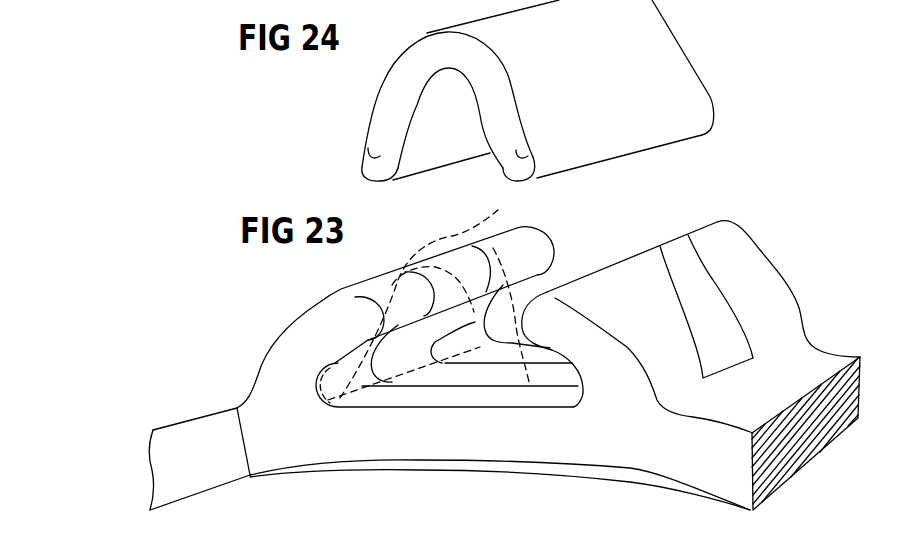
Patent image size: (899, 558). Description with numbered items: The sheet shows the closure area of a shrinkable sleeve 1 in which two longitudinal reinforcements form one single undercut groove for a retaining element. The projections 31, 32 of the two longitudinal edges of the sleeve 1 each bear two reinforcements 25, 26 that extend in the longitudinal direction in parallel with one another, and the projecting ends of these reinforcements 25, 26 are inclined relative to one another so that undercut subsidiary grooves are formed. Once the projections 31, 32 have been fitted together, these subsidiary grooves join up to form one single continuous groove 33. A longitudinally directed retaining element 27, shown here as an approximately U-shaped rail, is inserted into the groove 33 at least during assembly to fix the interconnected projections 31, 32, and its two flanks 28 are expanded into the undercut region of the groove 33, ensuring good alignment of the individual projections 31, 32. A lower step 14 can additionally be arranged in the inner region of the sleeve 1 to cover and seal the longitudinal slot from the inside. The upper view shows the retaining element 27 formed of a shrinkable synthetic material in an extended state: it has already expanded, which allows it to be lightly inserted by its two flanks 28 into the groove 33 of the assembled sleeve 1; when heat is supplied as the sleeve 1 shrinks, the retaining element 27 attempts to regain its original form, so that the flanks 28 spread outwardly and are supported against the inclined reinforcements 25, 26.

In FIG. 23, the sleeve 1 is at (597, 452).
In FIG. 23, the lower step 14 is at (316, 473).
In FIG. 23, the reinforcement 25 is at (303, 335).
In FIG. 23, the reinforcement 26 is at (426, 265).
In FIG. 24, the retaining element 27 is at (507, 64).
In FIG. 23, the retaining element 27 is at (461, 224).
In FIG. 24, the flanks 28 is at (368, 143).
In FIG. 23, the flanks 28 is at (342, 398).
In FIG. 23, the projection 31 is at (418, 455).
In FIG. 23, the projection 32 is at (445, 377).
In FIG. 23, the groove 33 is at (676, 231).